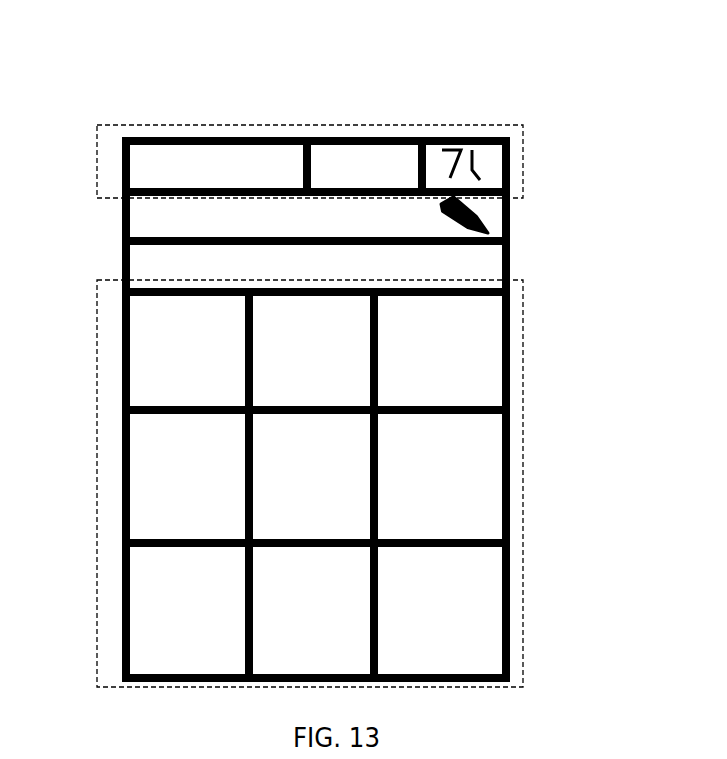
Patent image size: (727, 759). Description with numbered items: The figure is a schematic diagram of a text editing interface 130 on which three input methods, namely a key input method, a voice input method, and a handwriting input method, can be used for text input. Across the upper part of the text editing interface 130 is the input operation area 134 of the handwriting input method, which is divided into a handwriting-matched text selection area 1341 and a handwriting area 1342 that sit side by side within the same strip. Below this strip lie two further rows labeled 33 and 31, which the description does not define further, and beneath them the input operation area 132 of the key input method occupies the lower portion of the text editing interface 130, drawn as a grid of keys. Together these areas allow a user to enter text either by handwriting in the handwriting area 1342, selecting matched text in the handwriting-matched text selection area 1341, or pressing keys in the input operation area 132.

The text editing interface 130 is at (330, 94).
The input operation area of the handwriting input method 134 is at (523, 172).
The handwriting-matched text selection area 1341 is at (225, 162).
The handwriting area 1342 is at (390, 157).
The handwriting input row 33 is at (175, 223).
The text mode indicator row 31 is at (175, 267).
The input operation area of the key input method 132 is at (523, 442).